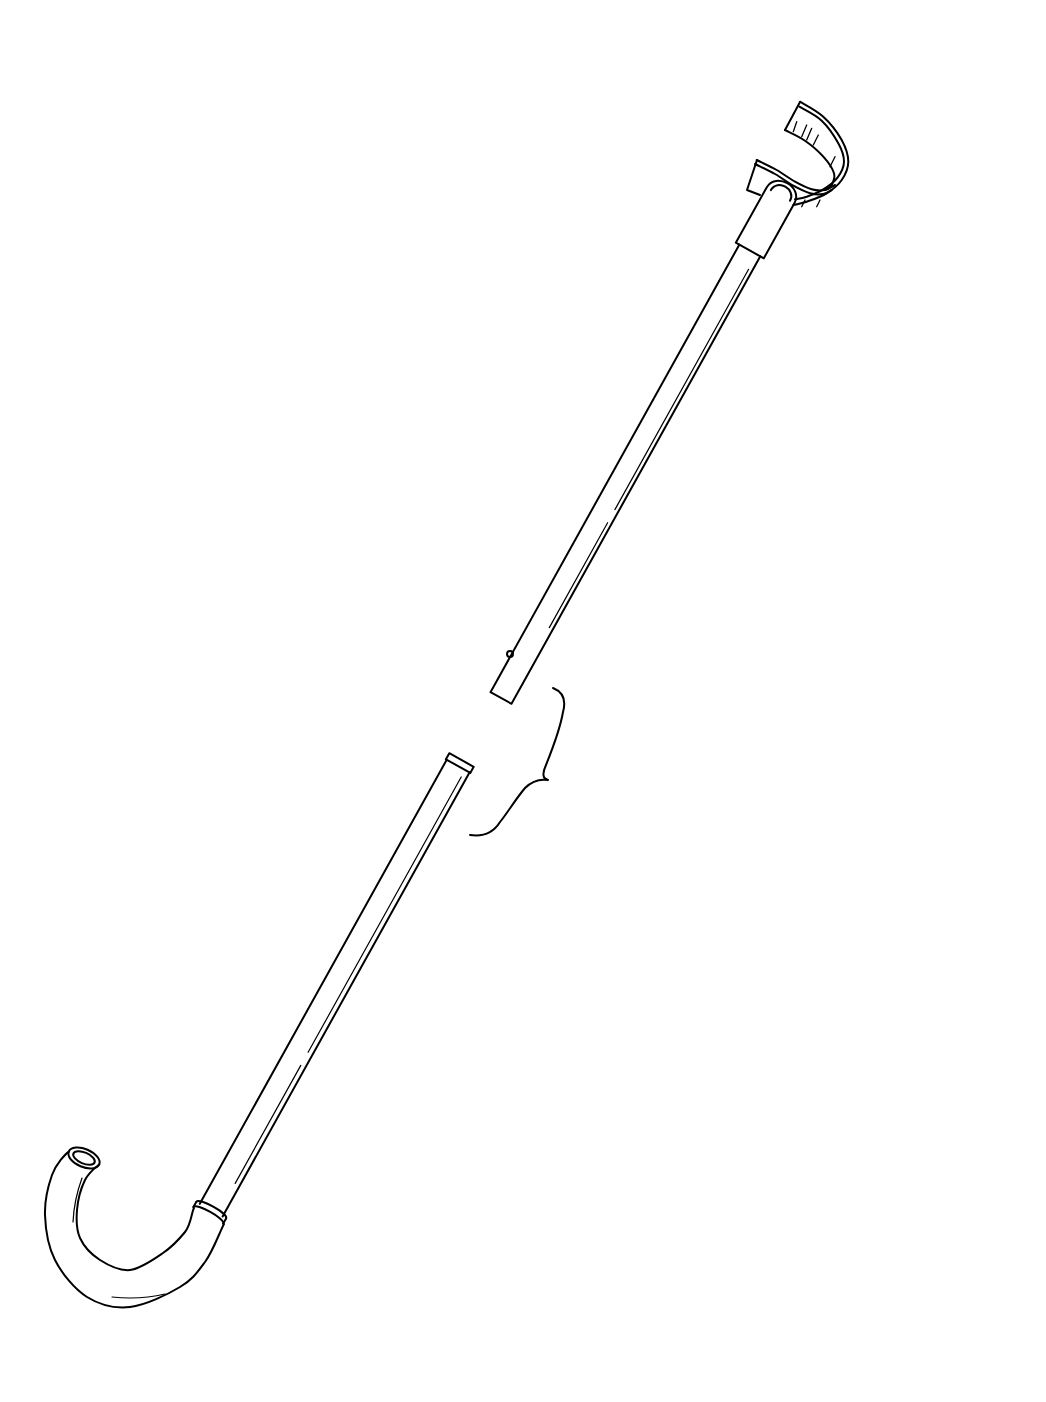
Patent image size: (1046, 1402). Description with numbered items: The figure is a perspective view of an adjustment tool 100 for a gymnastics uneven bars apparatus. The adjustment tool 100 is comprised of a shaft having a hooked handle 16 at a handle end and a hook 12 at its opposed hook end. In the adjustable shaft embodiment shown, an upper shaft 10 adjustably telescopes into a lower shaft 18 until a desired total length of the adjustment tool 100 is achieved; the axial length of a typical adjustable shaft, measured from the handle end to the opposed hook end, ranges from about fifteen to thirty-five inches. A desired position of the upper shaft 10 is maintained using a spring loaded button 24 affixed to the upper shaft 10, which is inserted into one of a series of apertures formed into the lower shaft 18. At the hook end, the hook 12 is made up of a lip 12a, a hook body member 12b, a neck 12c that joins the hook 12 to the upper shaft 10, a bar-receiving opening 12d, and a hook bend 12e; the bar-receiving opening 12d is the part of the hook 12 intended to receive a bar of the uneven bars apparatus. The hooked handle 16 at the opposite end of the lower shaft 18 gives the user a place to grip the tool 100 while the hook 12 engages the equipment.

The adjustment tool 100 is at (551, 949).
The hook 12 is at (863, 172).
The lip 12a is at (800, 100).
The hook body member 12b is at (840, 130).
The neck 12c is at (770, 225).
The bar-receiving opening 12d is at (767, 142).
The hook bend 12e is at (838, 183).
The upper shaft 10 is at (602, 518).
The spring loaded button 24 is at (506, 654).
The lower shaft 18 is at (308, 1045).
The handle 16 is at (103, 1293).